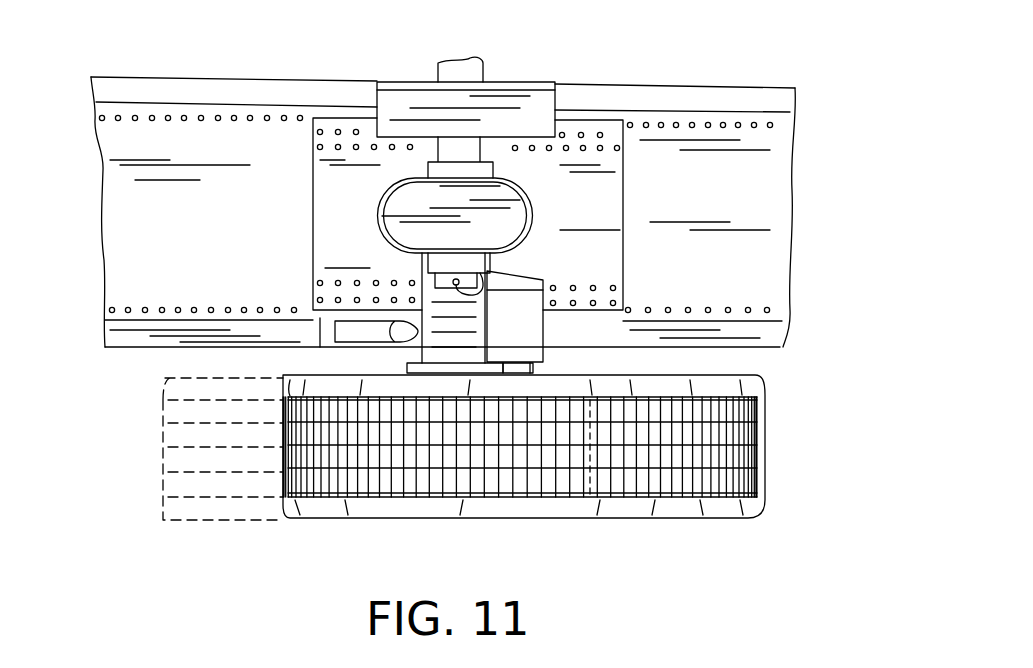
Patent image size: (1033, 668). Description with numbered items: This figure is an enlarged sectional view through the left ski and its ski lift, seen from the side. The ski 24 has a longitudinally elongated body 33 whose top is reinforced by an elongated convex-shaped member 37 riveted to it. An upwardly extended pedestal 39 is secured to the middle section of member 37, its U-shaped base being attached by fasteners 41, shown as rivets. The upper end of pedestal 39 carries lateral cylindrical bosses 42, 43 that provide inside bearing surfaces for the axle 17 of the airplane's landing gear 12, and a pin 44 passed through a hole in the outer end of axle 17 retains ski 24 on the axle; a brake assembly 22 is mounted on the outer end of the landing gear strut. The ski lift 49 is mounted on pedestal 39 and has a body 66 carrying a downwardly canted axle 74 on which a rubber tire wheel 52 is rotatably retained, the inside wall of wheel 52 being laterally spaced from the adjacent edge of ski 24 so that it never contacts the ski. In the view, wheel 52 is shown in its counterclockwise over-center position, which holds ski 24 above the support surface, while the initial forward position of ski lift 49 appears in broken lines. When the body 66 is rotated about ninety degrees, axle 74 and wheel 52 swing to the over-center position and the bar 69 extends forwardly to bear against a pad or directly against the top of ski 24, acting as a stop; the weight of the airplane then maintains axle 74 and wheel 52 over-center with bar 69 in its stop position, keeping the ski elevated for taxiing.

The landing gear 12 is at (106, 363).
The axle 17 is at (483, 71).
The brake assembly 22 is at (392, 97).
The ski 24 is at (98, 224).
The body 33 is at (727, 98).
The convex-shaped member 37 is at (778, 193).
The pedestal 39 is at (532, 216).
The fasteners 41 is at (583, 135).
The cylindrical boss 42 is at (421, 262).
The cylindrical boss 43 is at (376, 169).
The pin 44 is at (490, 272).
The ski lift 49 is at (352, 518).
The wheel 52 is at (177, 522).
The body 66 is at (517, 328).
The bar 69 is at (345, 332).
The axle 74 is at (515, 375).